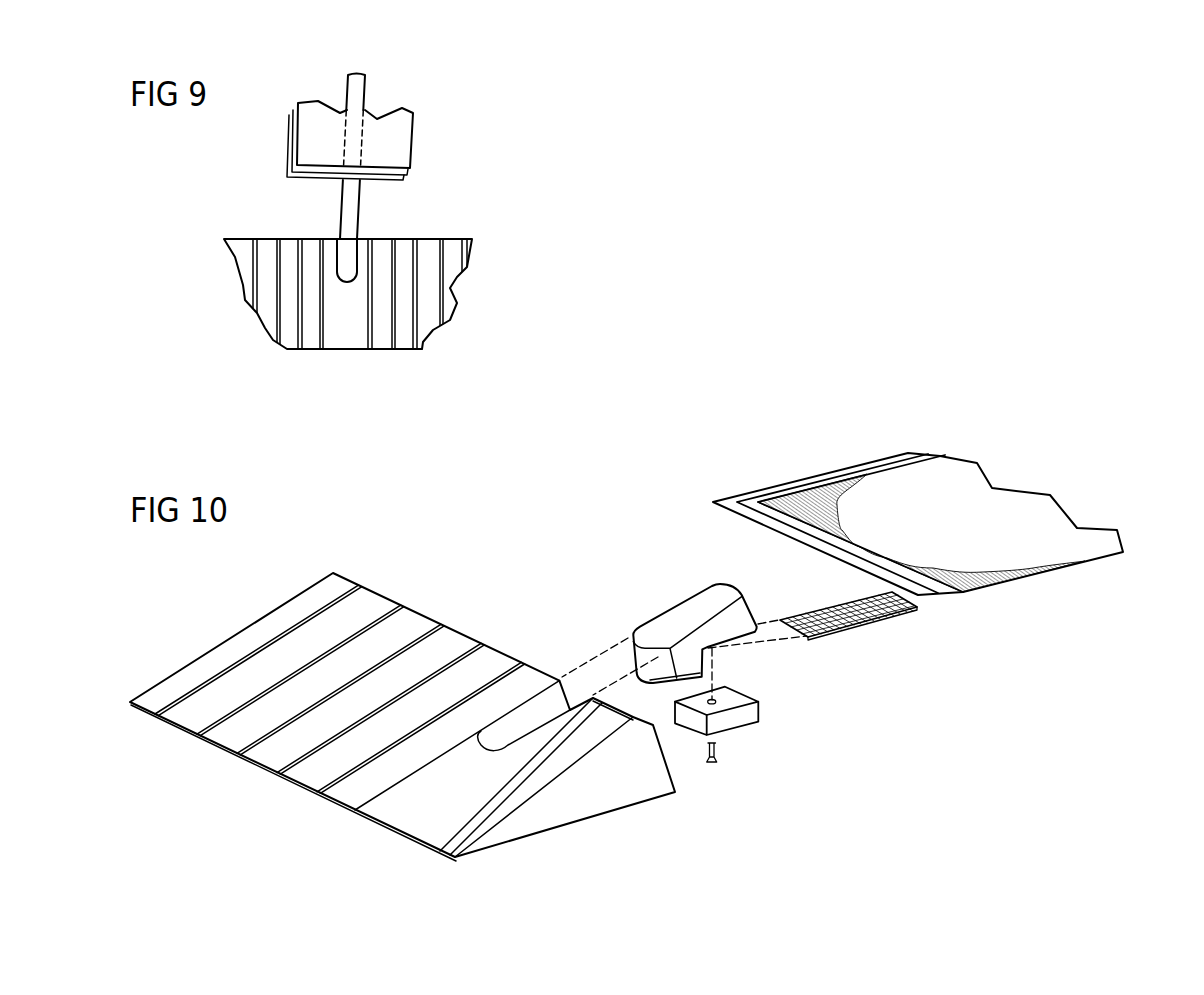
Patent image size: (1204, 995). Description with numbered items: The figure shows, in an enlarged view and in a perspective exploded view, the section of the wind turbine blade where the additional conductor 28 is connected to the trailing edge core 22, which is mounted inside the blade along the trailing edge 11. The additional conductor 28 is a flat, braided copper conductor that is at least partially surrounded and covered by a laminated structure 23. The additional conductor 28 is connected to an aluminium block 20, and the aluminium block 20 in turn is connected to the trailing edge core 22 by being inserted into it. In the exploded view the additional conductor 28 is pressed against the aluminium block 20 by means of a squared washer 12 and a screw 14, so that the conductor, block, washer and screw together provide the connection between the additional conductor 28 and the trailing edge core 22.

In FIG. 9, the trailing edge 11 is at (405, 338).
In FIG. 10, the squared washer 12 is at (753, 715).
In FIG. 10, the screw 14 is at (717, 753).
In FIG. 10, the aluminium block 20 is at (688, 608).
In FIG. 9, the trailing edge core 22 is at (348, 340).
In FIG. 10, the trailing edge core 22 is at (407, 612).
In FIG. 9, the laminated structure 23 is at (405, 148).
In FIG. 10, the laminated structure 23 is at (962, 568).
In FIG. 9, the additional conductor 28 is at (364, 95).
In FIG. 10, the additional conductor 28 is at (808, 618).